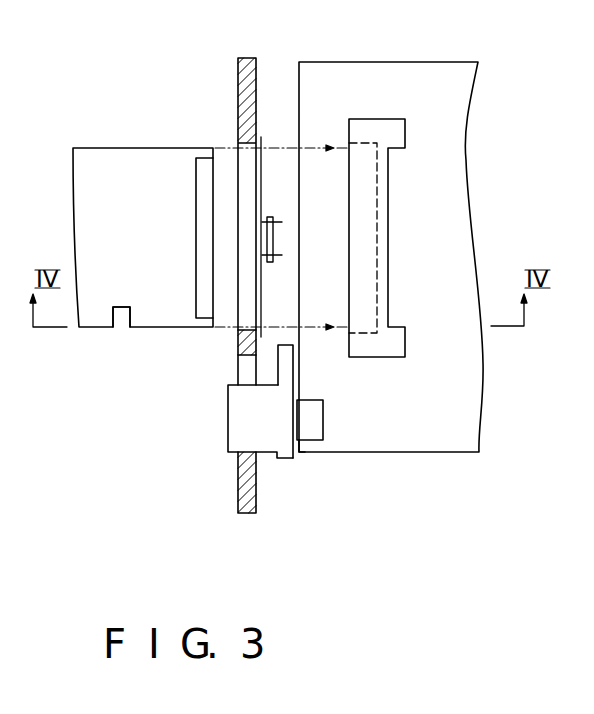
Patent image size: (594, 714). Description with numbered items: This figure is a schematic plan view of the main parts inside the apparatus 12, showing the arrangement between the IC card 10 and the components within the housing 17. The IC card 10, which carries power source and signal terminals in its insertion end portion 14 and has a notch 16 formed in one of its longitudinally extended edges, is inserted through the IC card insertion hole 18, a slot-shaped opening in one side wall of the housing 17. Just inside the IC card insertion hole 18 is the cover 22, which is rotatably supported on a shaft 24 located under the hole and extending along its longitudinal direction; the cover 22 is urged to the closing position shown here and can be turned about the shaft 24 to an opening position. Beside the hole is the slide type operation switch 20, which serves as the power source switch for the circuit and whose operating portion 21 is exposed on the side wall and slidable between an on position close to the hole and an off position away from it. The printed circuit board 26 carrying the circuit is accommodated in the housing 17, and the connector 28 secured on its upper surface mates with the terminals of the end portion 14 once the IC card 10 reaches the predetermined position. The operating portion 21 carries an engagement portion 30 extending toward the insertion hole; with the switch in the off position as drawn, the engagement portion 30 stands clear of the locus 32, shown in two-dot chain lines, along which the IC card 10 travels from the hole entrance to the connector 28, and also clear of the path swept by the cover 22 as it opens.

The IC card 10 is at (142, 173).
The apparatus 12 is at (238, 483).
The end portion 14 is at (196, 248).
The notch 16 is at (122, 318).
The housing 17 is at (243, 495).
The IC card insertion hole 18 is at (242, 317).
The slide type operation switch 20 is at (297, 457).
The operating portion 21 is at (228, 420).
The cover 22 is at (270, 140).
The shaft 24 is at (270, 217).
The printed circuit board 26 is at (349, 62).
The connector 28 is at (384, 119).
The engagement portion 30 is at (283, 362).
The locus 32 is at (312, 325).